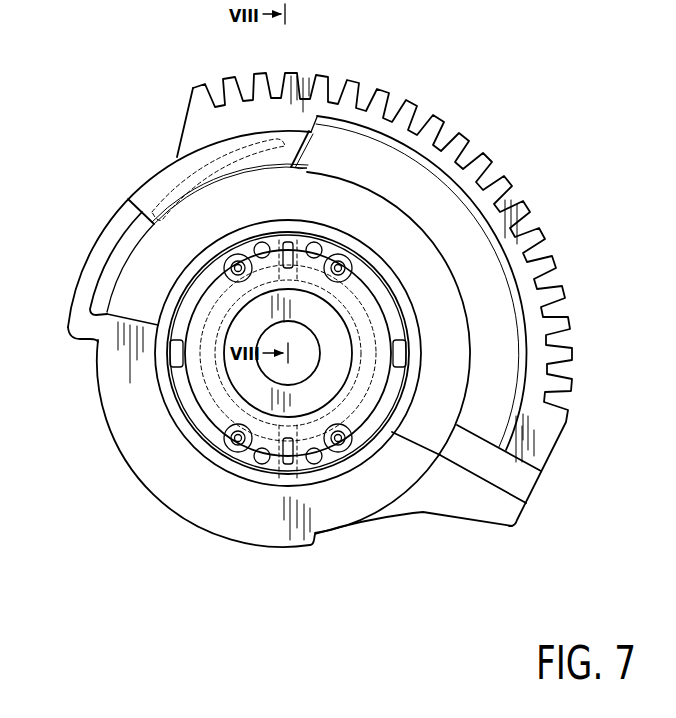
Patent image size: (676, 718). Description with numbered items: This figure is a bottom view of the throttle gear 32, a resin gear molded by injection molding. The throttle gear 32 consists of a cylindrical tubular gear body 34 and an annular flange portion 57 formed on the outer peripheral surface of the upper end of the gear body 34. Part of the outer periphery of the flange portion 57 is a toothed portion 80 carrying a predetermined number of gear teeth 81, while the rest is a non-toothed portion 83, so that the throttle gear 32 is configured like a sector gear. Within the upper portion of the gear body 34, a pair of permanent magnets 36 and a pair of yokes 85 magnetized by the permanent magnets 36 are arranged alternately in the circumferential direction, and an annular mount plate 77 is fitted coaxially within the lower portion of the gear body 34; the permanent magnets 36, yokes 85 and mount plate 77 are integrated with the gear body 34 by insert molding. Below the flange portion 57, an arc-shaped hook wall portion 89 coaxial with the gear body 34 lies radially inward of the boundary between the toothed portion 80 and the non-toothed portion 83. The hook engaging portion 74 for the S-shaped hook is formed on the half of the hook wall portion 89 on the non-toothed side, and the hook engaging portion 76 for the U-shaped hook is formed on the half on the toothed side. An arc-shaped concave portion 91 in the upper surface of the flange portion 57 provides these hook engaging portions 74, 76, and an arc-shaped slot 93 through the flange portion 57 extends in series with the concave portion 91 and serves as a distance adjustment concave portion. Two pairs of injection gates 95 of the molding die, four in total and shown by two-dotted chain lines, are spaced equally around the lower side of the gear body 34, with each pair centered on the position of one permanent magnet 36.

The throttle gear 32 is at (479, 130).
The gear body 34 is at (185, 428).
The permanent magnets 36 is at (282, 275).
The flange portion 57 is at (100, 355).
The hook engaging portion 74 is at (141, 194).
The hook engaging portion 76 is at (233, 137).
The mount plate 77 is at (185, 432).
The toothed portion 80 is at (405, 294).
The gear teeth 81 is at (540, 236).
The non-toothed portion 83 is at (169, 508).
The yokes 85 is at (200, 397).
The hook wall portion 89 is at (160, 176).
The concave portion 91 is at (181, 158).
The arc-shaped slot 93 is at (117, 238).
The injection gates 95 is at (340, 252).